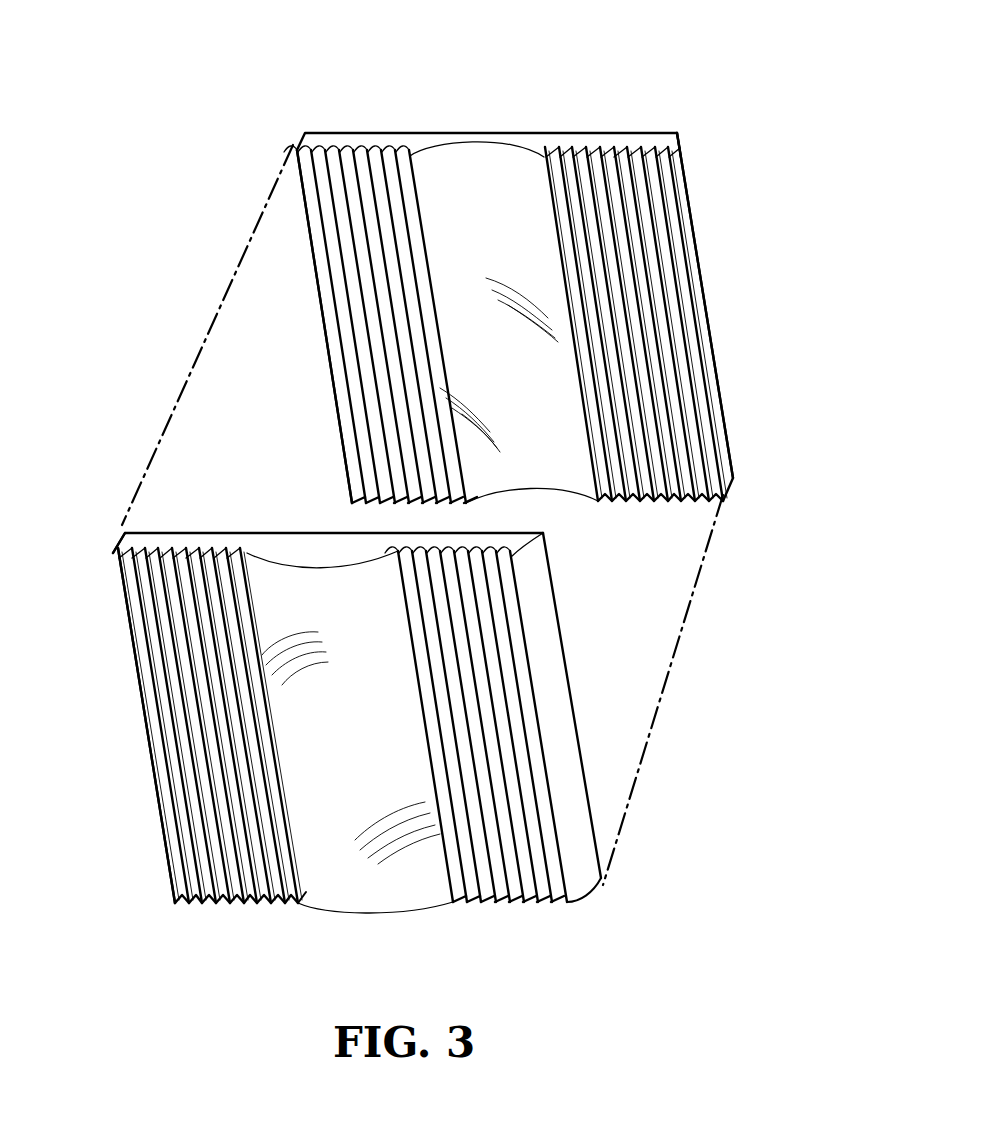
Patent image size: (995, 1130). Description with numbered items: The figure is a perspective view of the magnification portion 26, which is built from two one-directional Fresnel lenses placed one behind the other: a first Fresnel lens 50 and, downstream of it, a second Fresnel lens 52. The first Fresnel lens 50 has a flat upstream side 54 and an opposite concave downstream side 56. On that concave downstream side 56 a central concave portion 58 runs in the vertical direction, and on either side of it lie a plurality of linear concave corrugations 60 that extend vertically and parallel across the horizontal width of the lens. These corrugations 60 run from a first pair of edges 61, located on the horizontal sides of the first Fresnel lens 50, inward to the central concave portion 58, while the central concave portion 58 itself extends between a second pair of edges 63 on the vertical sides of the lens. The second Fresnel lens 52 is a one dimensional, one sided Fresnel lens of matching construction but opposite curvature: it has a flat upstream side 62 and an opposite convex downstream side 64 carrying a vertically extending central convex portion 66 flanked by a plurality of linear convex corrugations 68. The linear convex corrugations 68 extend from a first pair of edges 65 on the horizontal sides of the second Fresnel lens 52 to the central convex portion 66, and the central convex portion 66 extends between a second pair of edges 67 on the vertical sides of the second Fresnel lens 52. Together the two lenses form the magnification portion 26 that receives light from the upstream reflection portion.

The magnification portion 26 is at (146, 100).
The first Fresnel lens 50 is at (641, 126).
The second Fresnel lens 52 is at (593, 677).
The flat upstream side 54 is at (683, 162).
The concave downstream side 56 is at (680, 344).
The central concave portion 58 is at (468, 160).
The linear concave corrugations 60 is at (358, 345).
The first pair of edges 61 is at (307, 252).
The flat upstream side 62 is at (550, 570).
The second pair of edges 63 is at (527, 133).
The convex downstream side 64 is at (570, 900).
The first pair of edges 65 is at (142, 698).
The central convex portion 66 is at (286, 588).
The second pair of edges 67 is at (222, 534).
The linear convex corrugations 68 is at (160, 608).